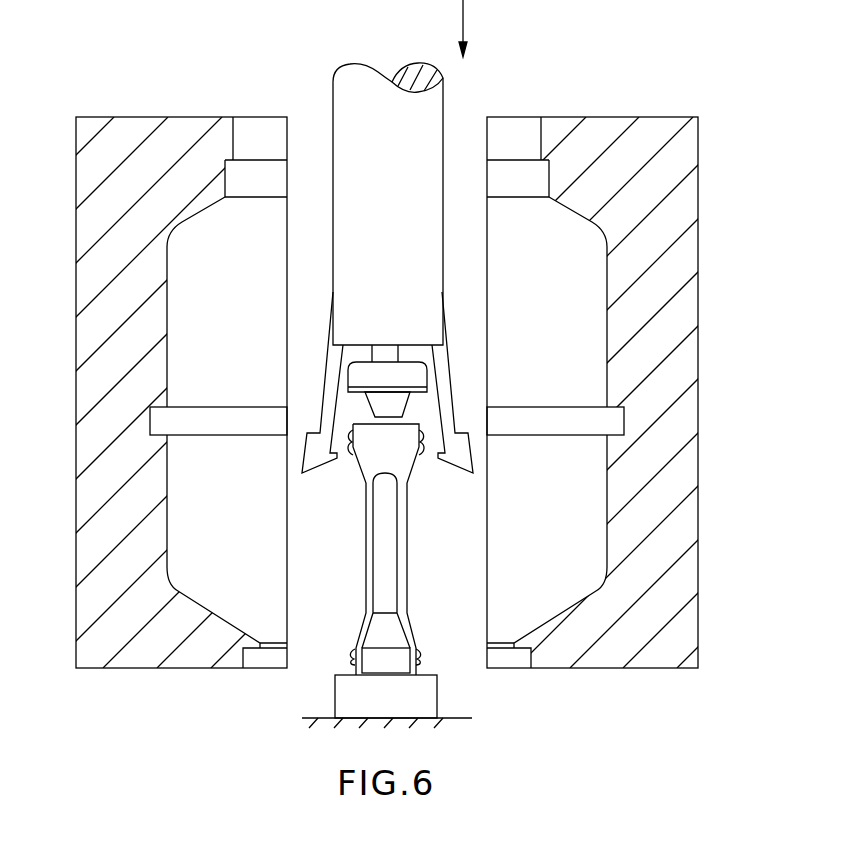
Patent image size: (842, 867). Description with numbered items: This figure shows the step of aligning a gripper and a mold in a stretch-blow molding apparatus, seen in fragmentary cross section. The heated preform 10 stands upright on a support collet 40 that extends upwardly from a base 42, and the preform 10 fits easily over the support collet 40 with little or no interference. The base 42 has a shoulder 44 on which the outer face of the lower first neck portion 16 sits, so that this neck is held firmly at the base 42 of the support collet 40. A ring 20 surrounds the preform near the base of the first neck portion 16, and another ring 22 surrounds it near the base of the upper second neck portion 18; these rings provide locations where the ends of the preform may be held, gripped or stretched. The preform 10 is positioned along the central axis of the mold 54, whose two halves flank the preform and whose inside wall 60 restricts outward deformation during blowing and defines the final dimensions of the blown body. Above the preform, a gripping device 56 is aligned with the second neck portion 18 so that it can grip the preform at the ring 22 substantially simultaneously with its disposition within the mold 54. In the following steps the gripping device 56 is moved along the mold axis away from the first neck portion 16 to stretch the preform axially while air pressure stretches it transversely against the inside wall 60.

The preform 10 is at (406, 561).
The first neck portion 16 is at (422, 648).
The second neck portion 18 is at (351, 447).
The ring 20 is at (351, 650).
The ring 22 is at (421, 447).
The support collet 40 is at (385, 547).
The base 42 is at (334, 687).
The shoulder 44 is at (426, 674).
The mold 54 is at (76, 406).
The gripping device 56 is at (452, 368).
The inside wall 60 is at (170, 292).